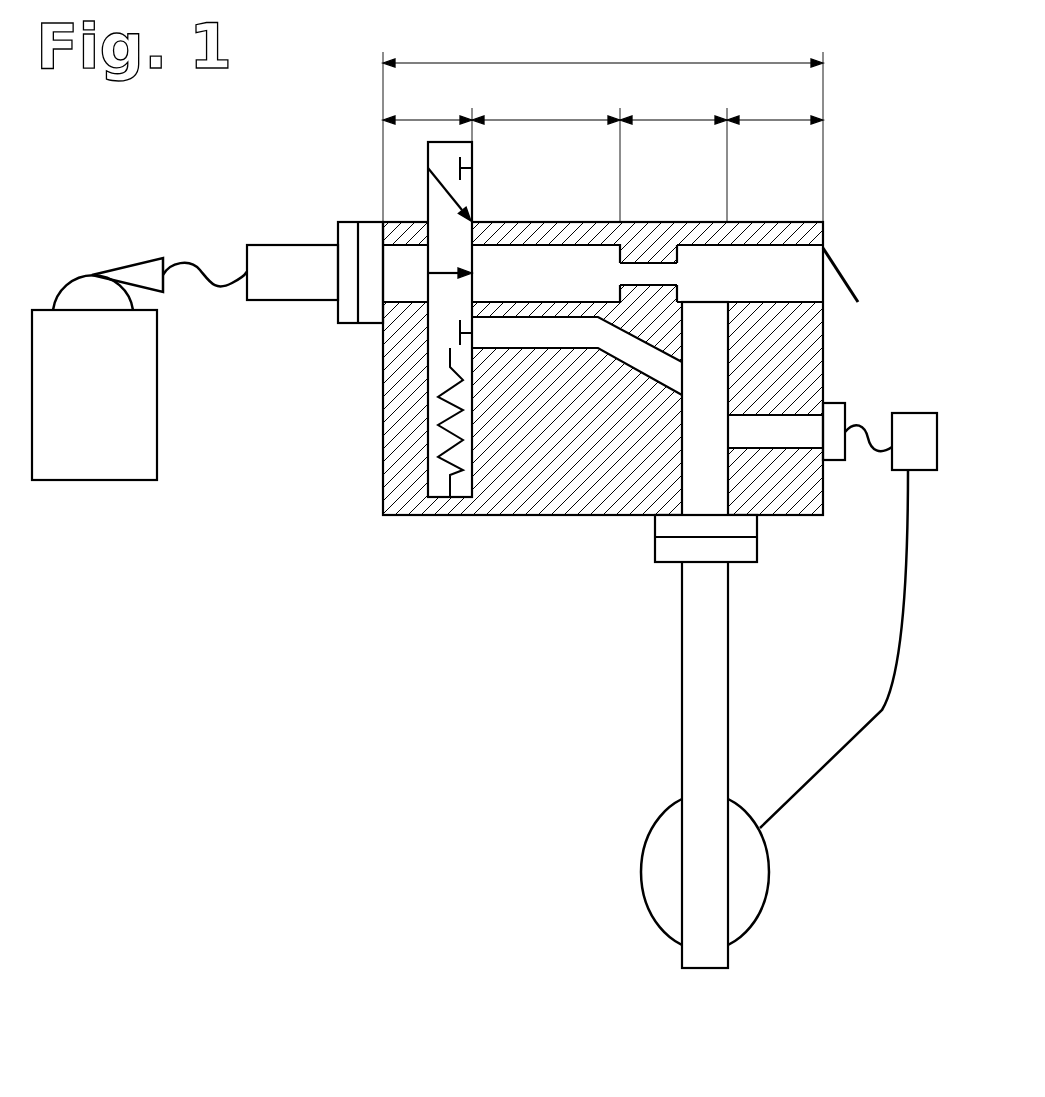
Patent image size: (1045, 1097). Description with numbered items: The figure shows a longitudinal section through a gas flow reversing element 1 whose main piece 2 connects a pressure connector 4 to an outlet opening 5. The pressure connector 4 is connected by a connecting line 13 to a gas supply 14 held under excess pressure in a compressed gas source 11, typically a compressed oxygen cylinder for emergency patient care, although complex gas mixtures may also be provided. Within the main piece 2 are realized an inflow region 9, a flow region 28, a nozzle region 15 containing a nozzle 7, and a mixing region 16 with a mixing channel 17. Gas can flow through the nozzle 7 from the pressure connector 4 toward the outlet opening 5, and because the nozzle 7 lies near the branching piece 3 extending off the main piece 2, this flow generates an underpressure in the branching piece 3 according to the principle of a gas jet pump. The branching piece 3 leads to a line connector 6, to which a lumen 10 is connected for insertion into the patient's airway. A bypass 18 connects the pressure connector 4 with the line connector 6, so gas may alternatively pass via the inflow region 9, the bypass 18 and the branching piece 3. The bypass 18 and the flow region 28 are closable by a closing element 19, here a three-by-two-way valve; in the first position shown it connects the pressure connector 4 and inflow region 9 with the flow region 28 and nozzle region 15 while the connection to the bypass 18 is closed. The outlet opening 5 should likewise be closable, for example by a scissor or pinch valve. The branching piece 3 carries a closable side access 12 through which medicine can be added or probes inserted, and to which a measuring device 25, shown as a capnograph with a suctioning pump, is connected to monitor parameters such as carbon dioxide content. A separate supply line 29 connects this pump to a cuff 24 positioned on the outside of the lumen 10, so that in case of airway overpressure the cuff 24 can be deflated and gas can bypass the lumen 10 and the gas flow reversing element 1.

The gas flow reversing element 1 is at (290, 151).
The main piece 2 is at (603, 124).
The branching piece 3 is at (720, 450).
The pressure connector 4 is at (372, 242).
The outlet opening 5 is at (750, 292).
The line connector 6 is at (720, 530).
The nozzle 7 is at (753, 222).
The inflow region 9 is at (393, 267).
The lumen 10 is at (711, 618).
The compressed gas source 11 is at (130, 450).
The side access 12 is at (807, 437).
The connecting line 13 is at (218, 285).
The gas supply 14 is at (82, 347).
The nozzle region 15 is at (650, 275).
The mixing region 16 is at (753, 268).
The mixing channel 17 is at (820, 290).
The bypass 18 is at (538, 335).
The closing element 19 is at (445, 302).
The cuff 24 is at (667, 832).
The measuring device 25 is at (910, 447).
The flow region 28 is at (507, 280).
The supply line 29 is at (777, 810).